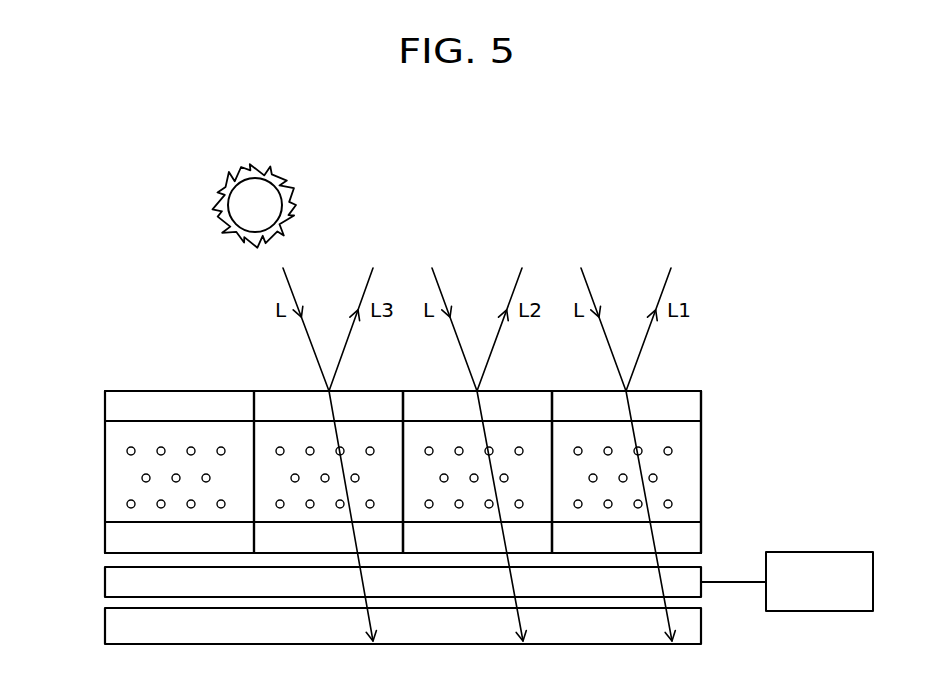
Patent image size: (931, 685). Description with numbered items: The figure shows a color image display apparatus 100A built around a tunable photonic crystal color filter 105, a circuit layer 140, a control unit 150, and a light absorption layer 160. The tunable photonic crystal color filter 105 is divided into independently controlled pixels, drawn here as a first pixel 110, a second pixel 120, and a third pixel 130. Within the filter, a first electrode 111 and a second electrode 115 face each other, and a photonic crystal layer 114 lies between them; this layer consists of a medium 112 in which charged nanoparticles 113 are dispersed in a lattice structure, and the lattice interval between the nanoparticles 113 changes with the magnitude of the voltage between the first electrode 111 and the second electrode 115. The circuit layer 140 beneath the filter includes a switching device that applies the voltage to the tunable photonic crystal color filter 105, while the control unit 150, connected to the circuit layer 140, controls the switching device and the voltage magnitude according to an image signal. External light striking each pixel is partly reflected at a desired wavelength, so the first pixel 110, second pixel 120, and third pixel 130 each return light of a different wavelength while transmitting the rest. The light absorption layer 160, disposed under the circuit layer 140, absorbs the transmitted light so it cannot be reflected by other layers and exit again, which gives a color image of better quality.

The color image display apparatus 100A is at (146, 314).
The tunable photonic crystal color filter 105 is at (101, 473).
The first pixel 110 is at (663, 386).
The second pixel 120 is at (514, 386).
The third pixel 130 is at (364, 386).
The first electrode 111 is at (701, 537).
The medium 112 is at (690, 484).
The nanoparticles 113 is at (672, 451).
The photonic crystal layer 114 is at (778, 443).
The second electrode 115 is at (701, 407).
The circuit layer 140 is at (105, 580).
The control unit 150 is at (820, 611).
The light absorption layer 160 is at (105, 626).